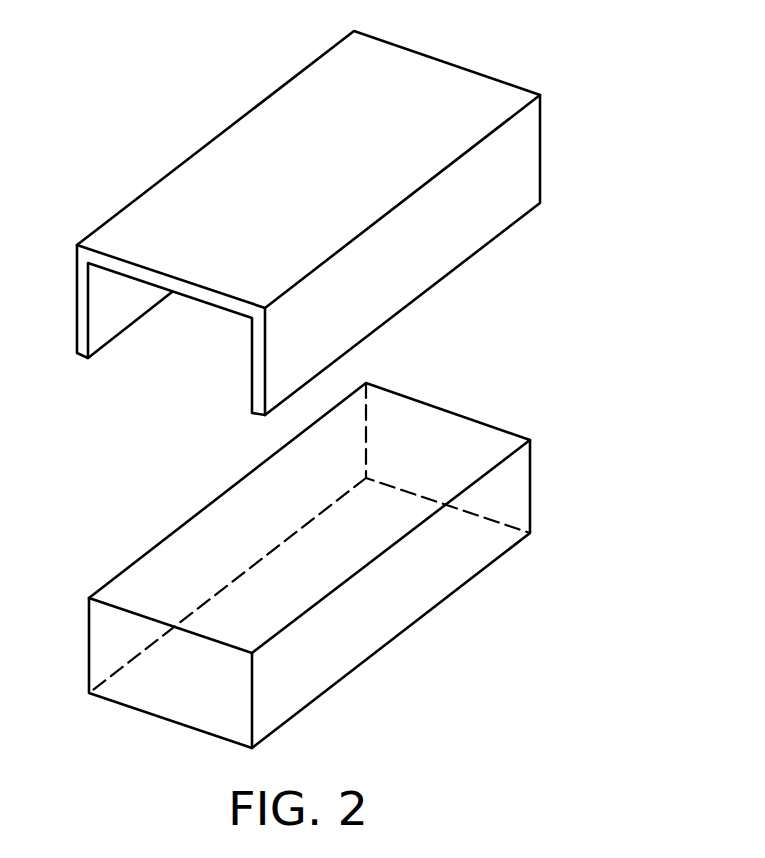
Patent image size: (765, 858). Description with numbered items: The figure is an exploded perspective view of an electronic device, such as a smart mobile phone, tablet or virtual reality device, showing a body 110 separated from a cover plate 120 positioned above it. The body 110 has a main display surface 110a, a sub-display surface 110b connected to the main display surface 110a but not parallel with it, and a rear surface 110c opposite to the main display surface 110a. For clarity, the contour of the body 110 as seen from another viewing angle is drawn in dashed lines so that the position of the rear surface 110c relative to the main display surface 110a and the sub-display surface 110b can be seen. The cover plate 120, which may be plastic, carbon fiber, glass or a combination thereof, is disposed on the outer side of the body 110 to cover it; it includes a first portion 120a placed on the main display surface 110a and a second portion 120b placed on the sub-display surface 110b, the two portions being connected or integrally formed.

The body 110 is at (336, 585).
The main display surface 110a is at (441, 430).
The sub-display surface 110b is at (458, 558).
The rear surface 110c is at (358, 640).
The cover plate 120 is at (386, 215).
The first portion 120a is at (432, 82).
The second portion 120b is at (417, 287).